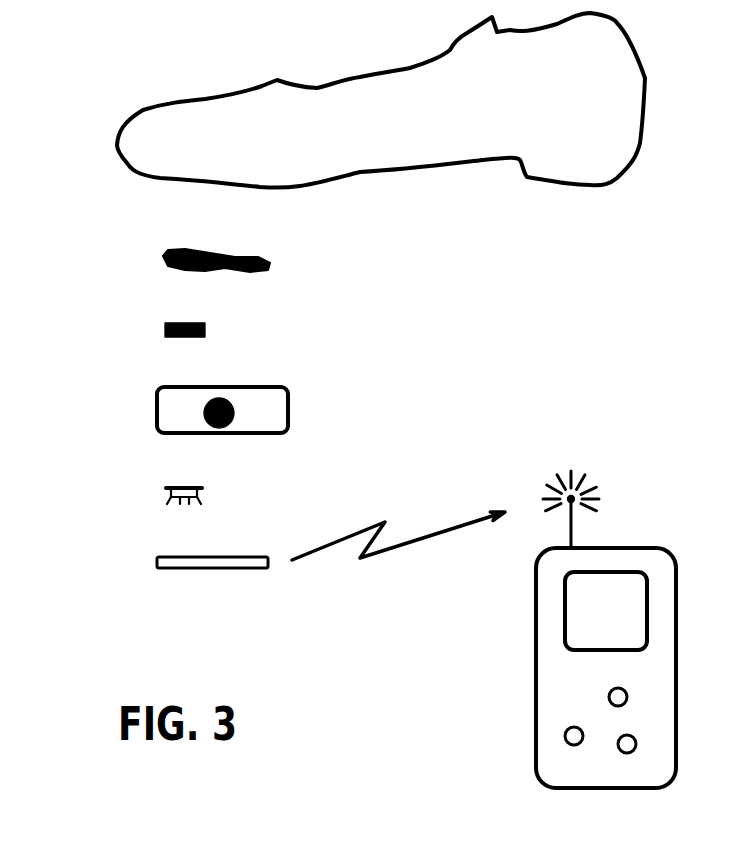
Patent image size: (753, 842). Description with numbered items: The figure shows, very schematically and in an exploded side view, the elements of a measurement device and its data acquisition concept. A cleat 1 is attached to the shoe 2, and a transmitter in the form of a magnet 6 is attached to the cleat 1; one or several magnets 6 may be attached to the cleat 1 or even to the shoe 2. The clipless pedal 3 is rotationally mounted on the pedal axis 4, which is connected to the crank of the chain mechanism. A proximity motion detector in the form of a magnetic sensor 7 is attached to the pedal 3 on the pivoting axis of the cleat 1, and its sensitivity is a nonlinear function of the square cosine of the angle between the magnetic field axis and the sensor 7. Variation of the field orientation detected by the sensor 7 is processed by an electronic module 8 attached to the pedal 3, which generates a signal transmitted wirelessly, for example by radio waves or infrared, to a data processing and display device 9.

The cleat 1 is at (144, 256).
The shoe 2 is at (125, 178).
The clipless pedal 3 is at (139, 407).
The pedal axis 4 is at (238, 394).
The magnet 6 is at (142, 330).
The magnetic sensor 7 is at (149, 484).
The electronic module 8 is at (135, 554).
The data processing and display device 9 is at (512, 749).